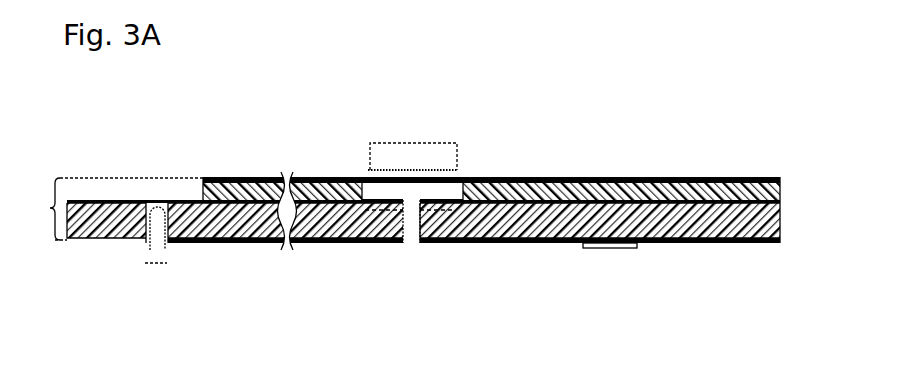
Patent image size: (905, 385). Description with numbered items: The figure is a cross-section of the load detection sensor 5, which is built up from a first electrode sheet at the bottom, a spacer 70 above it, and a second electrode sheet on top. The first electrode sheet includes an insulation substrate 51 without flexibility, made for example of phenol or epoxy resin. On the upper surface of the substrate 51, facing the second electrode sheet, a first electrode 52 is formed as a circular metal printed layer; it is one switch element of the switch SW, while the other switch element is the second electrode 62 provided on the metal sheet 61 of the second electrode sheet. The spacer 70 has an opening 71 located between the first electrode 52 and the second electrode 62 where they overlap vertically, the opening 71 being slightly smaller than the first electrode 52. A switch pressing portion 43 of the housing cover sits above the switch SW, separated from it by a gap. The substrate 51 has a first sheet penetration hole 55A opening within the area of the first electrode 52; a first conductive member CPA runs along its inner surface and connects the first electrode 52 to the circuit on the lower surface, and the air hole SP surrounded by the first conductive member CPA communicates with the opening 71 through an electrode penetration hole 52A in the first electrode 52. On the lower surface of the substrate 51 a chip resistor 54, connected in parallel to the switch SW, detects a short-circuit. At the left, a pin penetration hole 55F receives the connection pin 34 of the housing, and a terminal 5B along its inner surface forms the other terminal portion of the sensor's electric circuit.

The load detection sensor 5 is at (115, 209).
The terminal 5B is at (143, 243).
The connection pin 34 is at (153, 265).
The switch pressing portion 43 is at (368, 151).
The substrate 51 is at (771, 220).
The first electrode 52 is at (473, 246).
The electrode penetration hole 52A is at (410, 192).
The resistor 54 is at (610, 249).
The first sheet penetration hole 55A is at (424, 256).
The pin penetration hole 55F is at (171, 257).
The metal sheet 61 is at (268, 188).
The second electrode 62 is at (459, 178).
The spacer 70 is at (226, 177).
The opening 71 is at (389, 189).
The first conductive member CPA is at (402, 238).
The air hole SP is at (413, 245).
The switch SW is at (357, 177).